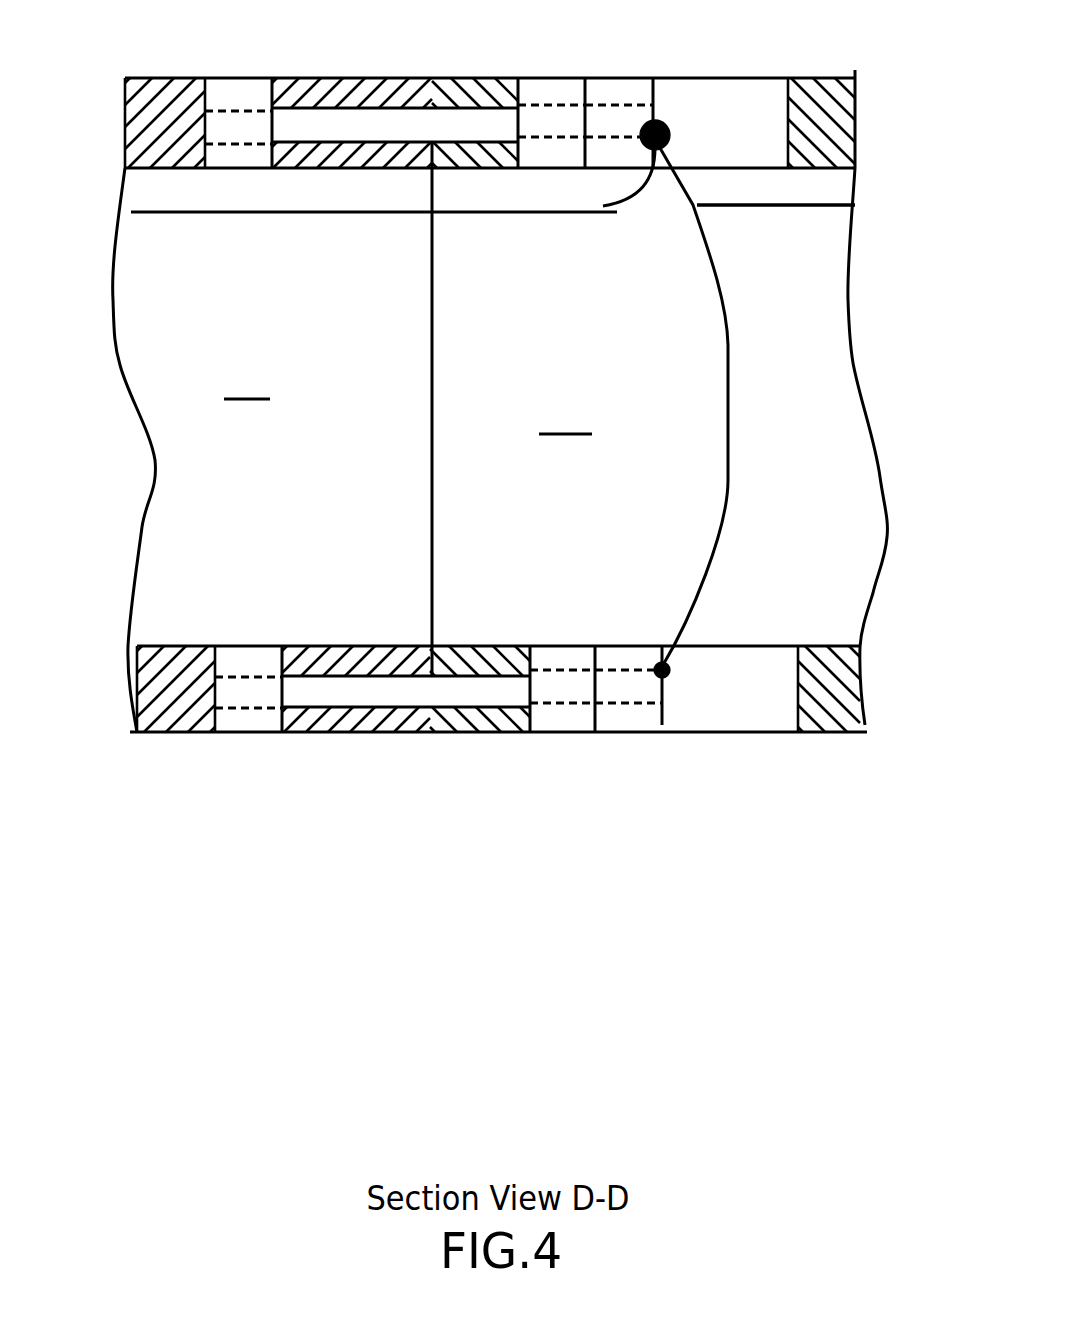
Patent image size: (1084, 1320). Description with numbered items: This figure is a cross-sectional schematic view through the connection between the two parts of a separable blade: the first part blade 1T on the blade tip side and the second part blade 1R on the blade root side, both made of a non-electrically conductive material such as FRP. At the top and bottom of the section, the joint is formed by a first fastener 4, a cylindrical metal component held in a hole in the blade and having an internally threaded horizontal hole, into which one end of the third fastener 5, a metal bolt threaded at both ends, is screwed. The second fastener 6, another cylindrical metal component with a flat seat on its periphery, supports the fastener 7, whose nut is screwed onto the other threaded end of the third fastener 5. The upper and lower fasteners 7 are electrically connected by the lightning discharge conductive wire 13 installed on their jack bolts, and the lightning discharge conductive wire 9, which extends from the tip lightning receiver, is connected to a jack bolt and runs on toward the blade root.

The first part blade 1T is at (247, 384).
The second part blade 1R is at (565, 418).
The first fastener 4 is at (237, 97).
The third fastener 5 is at (355, 125).
The second fastener 6 is at (548, 90).
The fastener 7 is at (617, 88).
The lightning discharge conductive wire 9 is at (752, 205).
The lightning discharge conductive wire 13 is at (732, 422).